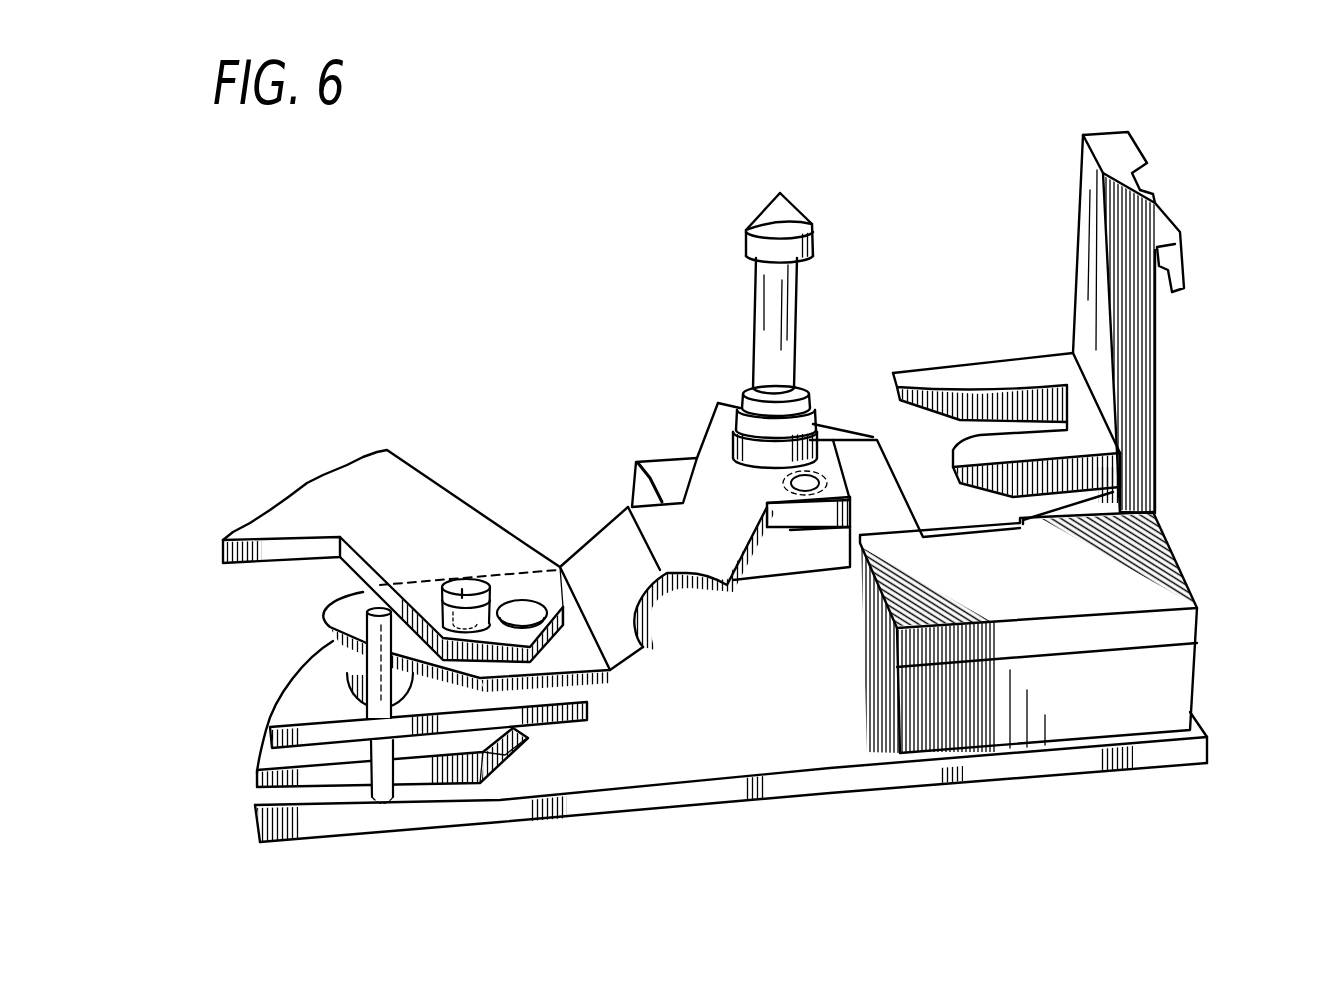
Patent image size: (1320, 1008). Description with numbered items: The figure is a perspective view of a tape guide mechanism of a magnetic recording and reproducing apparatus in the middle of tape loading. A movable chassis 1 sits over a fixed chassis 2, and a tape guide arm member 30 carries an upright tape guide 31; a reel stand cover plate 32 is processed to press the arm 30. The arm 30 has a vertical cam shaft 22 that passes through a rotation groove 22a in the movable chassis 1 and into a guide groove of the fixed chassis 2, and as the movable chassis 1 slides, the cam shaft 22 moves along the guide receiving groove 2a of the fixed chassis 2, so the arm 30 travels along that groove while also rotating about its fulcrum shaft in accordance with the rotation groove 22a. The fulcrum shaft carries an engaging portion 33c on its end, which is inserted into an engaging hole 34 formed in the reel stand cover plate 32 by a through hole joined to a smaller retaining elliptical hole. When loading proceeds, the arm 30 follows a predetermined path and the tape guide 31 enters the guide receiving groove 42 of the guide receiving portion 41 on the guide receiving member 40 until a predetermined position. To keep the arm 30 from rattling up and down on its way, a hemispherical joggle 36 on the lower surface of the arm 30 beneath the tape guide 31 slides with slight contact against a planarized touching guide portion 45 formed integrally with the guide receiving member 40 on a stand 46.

The movable chassis 1 is at (283, 691).
The fixed chassis 2 is at (731, 766).
The guide receiving groove 2a is at (272, 796).
The cam shaft 22 is at (395, 752).
The rotation groove 22a is at (343, 680).
The tape guide arm member 30 is at (638, 670).
The tape guide 31 is at (797, 294).
The reel stand cover plate 32 is at (430, 484).
The engaging portion 33c is at (463, 583).
The engaging hole 34 is at (518, 600).
The hemispherical joggle 36 is at (815, 495).
The guide receiving member 40 is at (1141, 489).
The guide receiving portion 41 is at (988, 373).
The guide receiving groove 42 is at (1034, 426).
The touching guide portion 45 is at (667, 470).
The stand 46 is at (1175, 681).